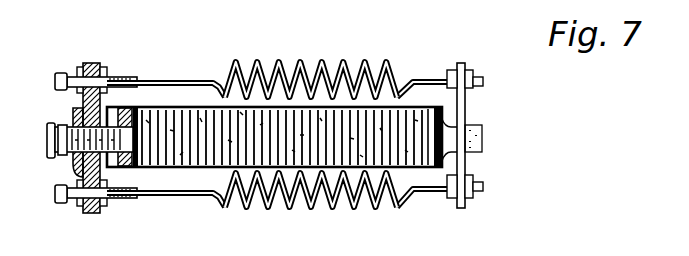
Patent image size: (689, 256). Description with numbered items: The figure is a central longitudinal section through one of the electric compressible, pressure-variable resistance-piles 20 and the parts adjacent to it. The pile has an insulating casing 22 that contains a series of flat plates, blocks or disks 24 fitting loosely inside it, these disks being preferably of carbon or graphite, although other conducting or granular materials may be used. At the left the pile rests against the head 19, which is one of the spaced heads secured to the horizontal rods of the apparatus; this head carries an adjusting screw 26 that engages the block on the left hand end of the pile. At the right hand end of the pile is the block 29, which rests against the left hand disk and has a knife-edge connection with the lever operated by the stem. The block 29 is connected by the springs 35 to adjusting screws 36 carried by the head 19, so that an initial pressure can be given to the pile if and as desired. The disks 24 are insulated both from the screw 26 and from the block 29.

The head 19 is at (74, 168).
The pressure-variable resistance-pile 20 is at (412, 106).
The insulating casing 22 is at (177, 105).
The disks 24 is at (197, 168).
The adjusting screw 26 is at (52, 125).
The block 29 is at (471, 102).
The springs 35 is at (279, 62).
The adjusting screws 36 is at (68, 76).